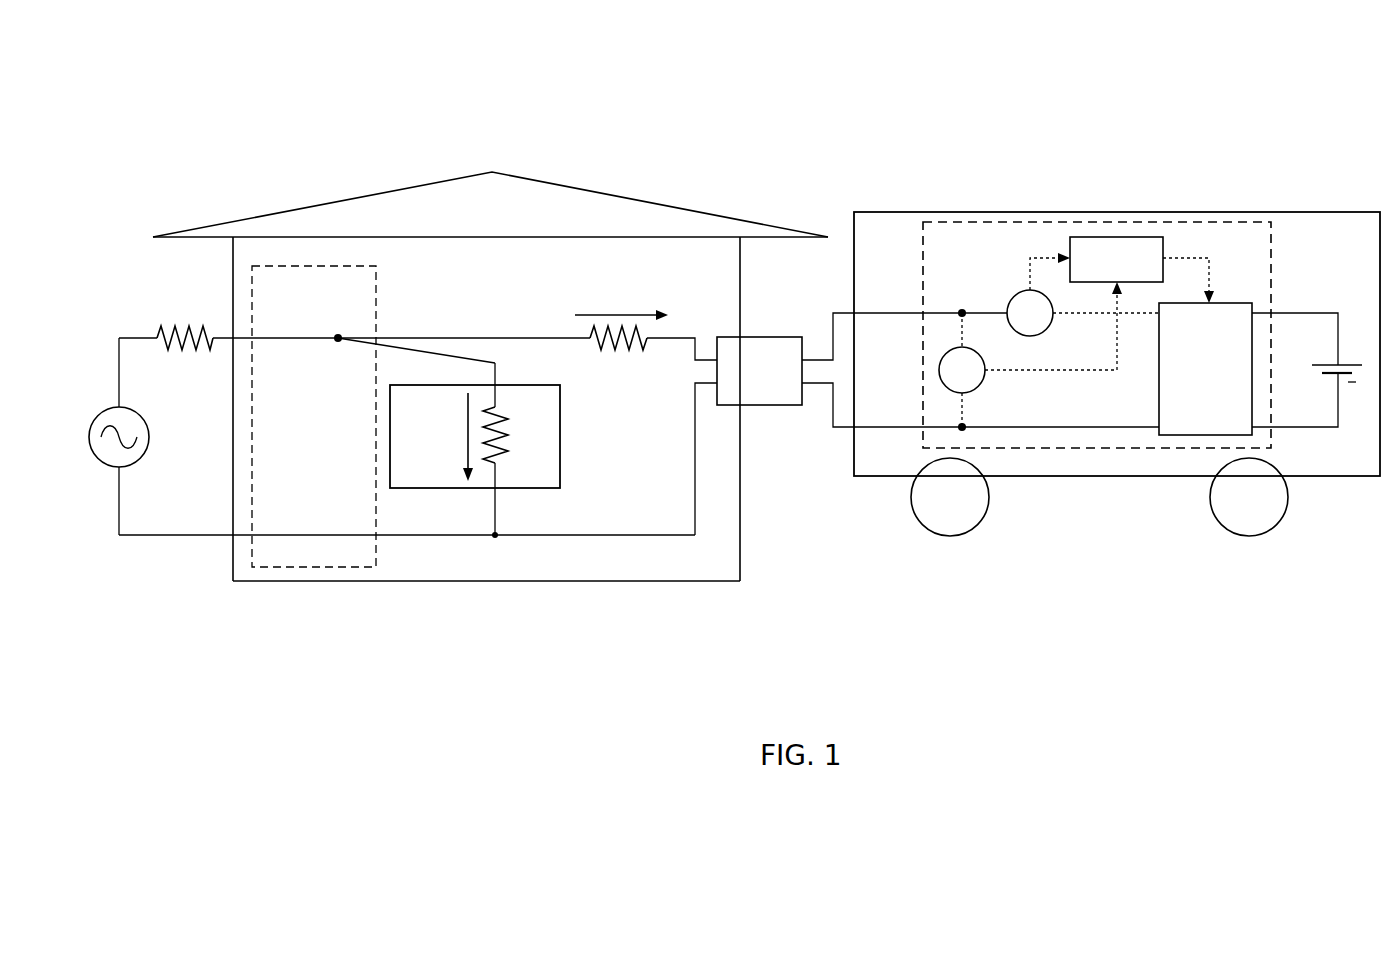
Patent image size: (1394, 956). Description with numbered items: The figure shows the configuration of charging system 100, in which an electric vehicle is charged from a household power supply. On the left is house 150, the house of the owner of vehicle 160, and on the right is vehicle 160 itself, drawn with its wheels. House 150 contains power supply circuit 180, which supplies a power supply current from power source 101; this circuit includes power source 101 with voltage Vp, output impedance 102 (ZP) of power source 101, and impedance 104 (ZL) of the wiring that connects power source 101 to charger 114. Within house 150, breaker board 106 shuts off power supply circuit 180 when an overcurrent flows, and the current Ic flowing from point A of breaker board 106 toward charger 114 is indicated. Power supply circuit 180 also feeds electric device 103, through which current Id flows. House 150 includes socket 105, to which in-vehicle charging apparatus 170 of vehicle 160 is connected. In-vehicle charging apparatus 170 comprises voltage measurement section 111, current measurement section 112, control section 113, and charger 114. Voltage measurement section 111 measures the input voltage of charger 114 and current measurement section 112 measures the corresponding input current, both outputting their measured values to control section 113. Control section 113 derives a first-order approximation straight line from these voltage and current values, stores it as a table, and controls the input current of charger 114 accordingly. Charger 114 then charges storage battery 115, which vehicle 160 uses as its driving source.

The charging system 100 is at (795, 50).
The house 150 is at (373, 158).
The power source 101 is at (143, 456).
The output impedance 102 is at (168, 353).
The power supply circuit 180 is at (170, 536).
The breaker board 106 is at (377, 291).
The electric device 103 is at (561, 445).
The impedance of the wiring 104 is at (643, 352).
The socket 105 is at (770, 337).
The vehicle 160 is at (1198, 207).
The in-vehicle charging apparatus 170 is at (1273, 247).
The voltage measurement section 111 is at (982, 383).
The current measurement section 112 is at (1011, 298).
The control section 113 is at (1164, 243).
The charger 114 is at (1159, 419).
The storage battery 115 is at (1312, 363).